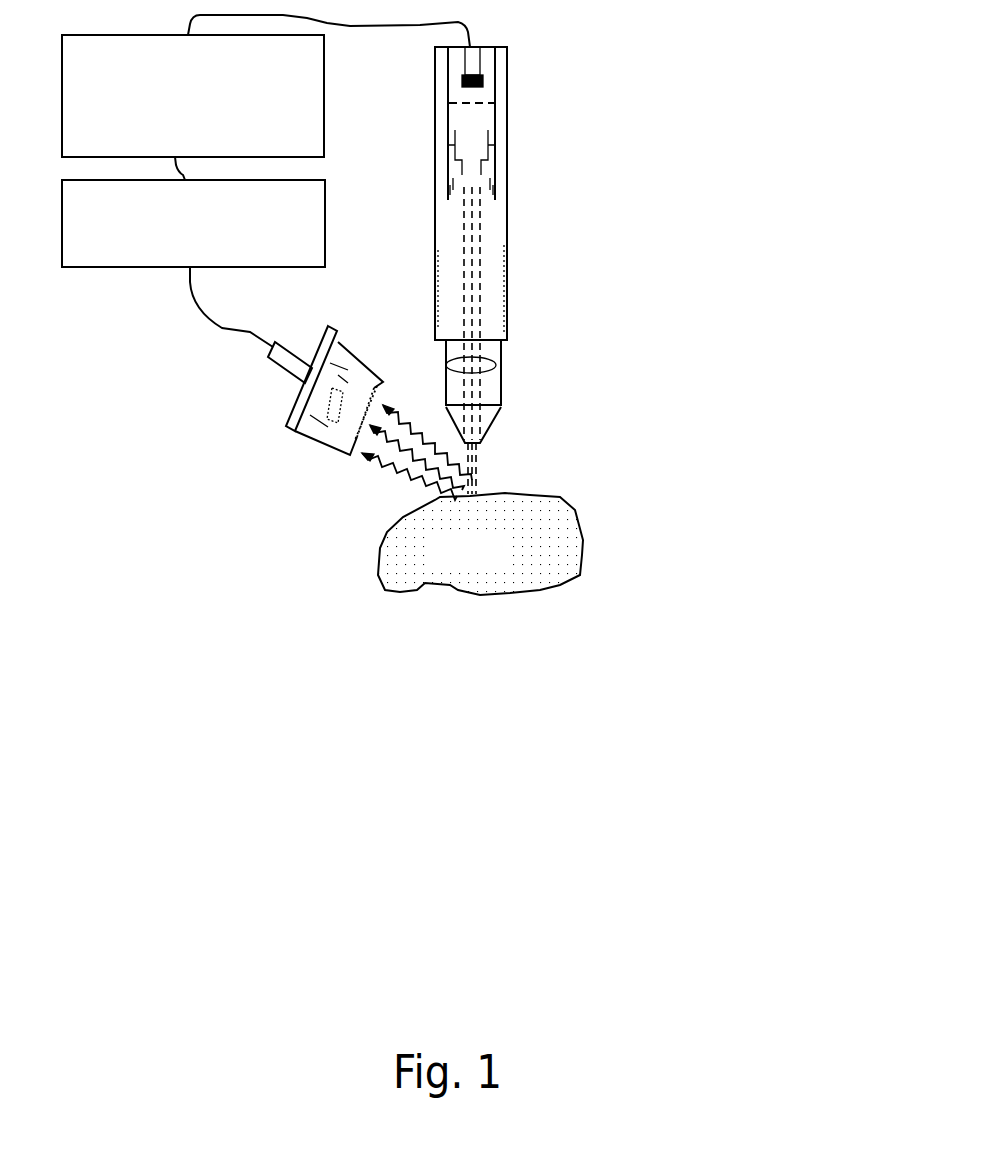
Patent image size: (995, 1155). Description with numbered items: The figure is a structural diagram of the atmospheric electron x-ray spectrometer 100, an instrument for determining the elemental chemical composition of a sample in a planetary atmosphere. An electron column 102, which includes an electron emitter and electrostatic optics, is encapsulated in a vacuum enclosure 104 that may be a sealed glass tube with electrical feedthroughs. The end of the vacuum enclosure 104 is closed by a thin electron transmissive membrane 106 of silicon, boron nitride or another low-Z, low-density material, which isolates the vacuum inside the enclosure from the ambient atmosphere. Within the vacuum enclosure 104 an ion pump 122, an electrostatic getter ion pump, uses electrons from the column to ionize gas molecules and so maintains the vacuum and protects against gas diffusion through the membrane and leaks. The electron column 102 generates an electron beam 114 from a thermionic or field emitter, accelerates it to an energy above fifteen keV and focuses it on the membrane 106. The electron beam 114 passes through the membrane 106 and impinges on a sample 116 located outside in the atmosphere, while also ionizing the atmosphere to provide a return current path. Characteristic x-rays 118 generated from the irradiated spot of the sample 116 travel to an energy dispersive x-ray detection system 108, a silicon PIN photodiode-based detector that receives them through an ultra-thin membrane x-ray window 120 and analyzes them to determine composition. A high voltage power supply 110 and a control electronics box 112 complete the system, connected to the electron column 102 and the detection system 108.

The atmospheric electron x-ray spectrometer 100 is at (302, 690).
The electron column 102 is at (548, 116).
The vacuum enclosure 104 is at (535, 226).
The electron transmissive membrane 106 is at (537, 390).
The energy dispersive x-ray detection system 108 is at (325, 403).
The high voltage power supply 110 is at (170, 97).
The control electronics box 112 is at (200, 234).
The electron beam 114 is at (493, 482).
The sample 116 is at (472, 563).
The characteristic x-rays 118 is at (337, 504).
The membrane x-ray window 120 is at (278, 450).
The ion pump 122 is at (554, 329).